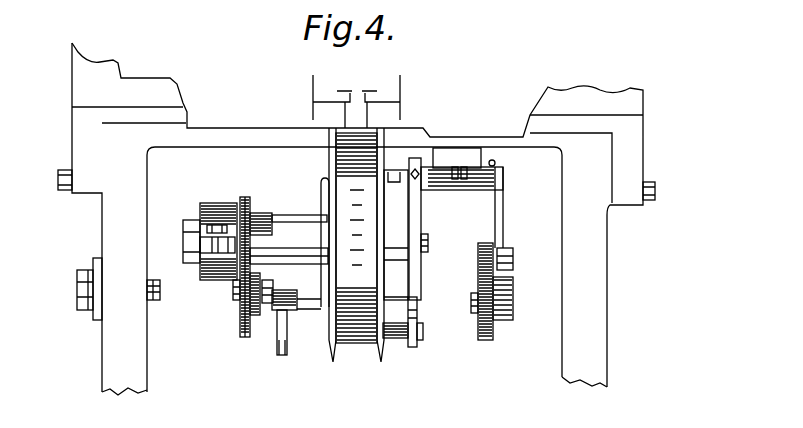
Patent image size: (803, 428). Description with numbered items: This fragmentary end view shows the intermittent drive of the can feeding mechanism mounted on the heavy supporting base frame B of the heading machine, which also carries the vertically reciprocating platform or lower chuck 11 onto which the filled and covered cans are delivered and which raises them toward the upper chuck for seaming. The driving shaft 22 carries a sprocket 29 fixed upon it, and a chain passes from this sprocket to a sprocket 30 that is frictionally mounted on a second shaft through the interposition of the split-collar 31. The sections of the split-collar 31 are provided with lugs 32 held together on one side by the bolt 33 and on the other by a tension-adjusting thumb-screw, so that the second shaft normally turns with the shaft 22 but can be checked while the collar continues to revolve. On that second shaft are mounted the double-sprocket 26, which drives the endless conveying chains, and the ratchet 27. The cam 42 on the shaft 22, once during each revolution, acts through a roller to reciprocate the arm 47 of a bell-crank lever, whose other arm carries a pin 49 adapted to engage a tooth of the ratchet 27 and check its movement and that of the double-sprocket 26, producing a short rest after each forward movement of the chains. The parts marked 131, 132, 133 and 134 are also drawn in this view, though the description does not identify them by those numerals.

The base frame B is at (593, 272).
The platform or lower chuck 11 is at (382, 99).
The shaft 22 is at (233, 289).
The double-sprocket 26 is at (332, 358).
The ratchet 27 is at (398, 280).
The sprocket 29 is at (240, 332).
The sprocket 30 is at (248, 196).
The split-collar 31 is at (211, 203).
The lugs 32 is at (200, 249).
The bolt 33 is at (218, 252).
The cam 42 is at (493, 332).
The arm 47 is at (503, 213).
The pin 49 is at (398, 236).
The lever 131 is at (288, 334).
The arm 132 is at (273, 340).
The bolt 133 is at (413, 347).
The collar 134 is at (430, 321).